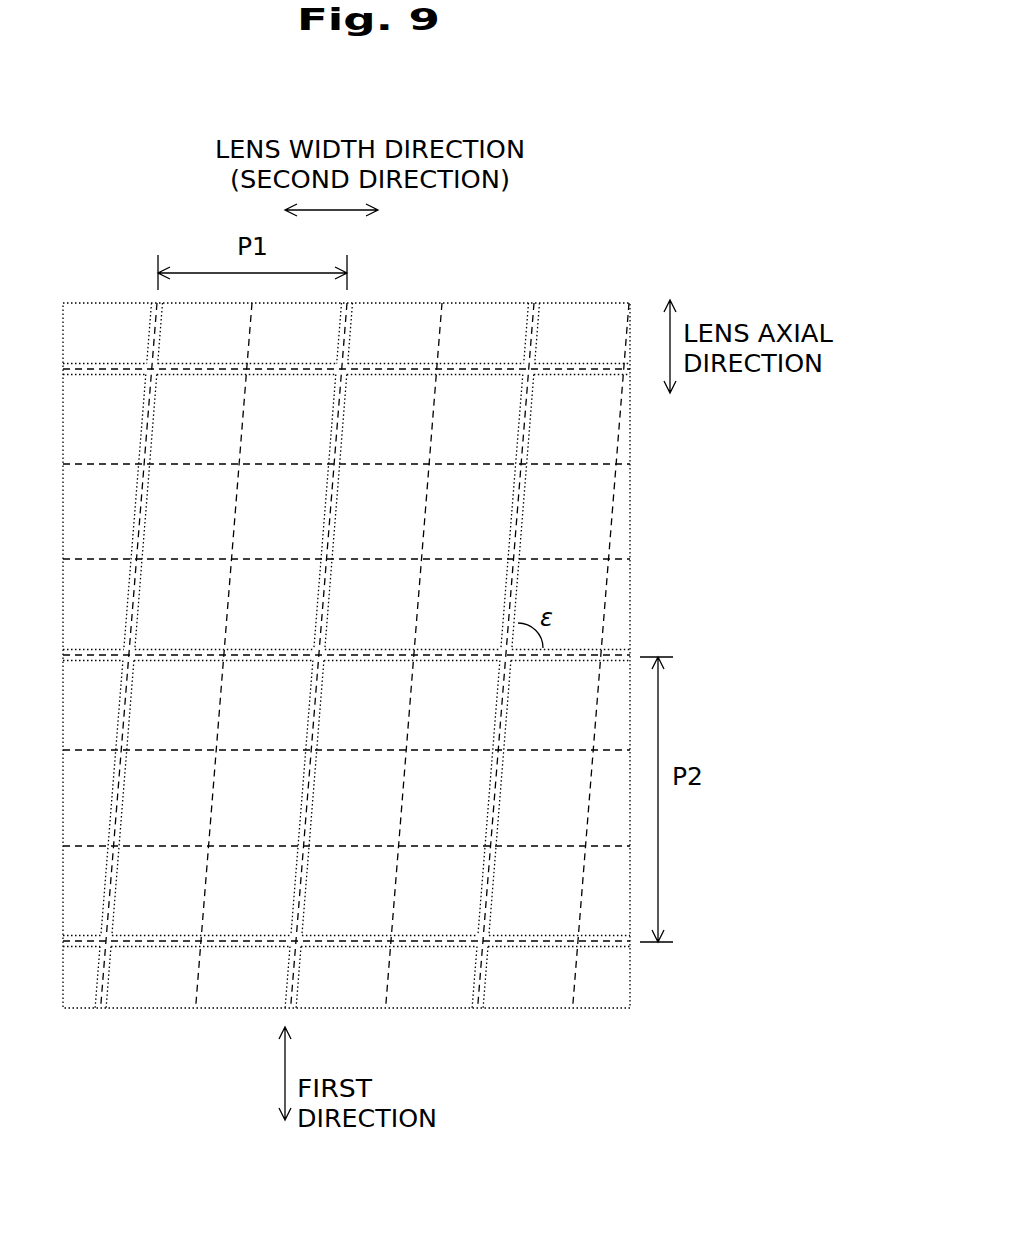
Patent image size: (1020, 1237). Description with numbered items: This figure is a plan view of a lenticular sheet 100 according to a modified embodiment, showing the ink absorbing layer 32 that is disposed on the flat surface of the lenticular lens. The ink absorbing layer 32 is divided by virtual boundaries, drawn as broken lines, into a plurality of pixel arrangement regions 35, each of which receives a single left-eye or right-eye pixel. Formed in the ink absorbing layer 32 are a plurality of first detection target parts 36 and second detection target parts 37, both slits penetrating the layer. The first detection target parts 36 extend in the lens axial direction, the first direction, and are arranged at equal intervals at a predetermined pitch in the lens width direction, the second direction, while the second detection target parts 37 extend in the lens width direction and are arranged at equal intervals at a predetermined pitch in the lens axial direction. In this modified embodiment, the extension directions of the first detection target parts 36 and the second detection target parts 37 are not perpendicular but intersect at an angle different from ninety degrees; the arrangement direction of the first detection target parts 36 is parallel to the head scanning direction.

The lenticular sheet 100 is at (625, 267).
The ink absorbing layer 32 is at (508, 990).
The pixel arrangement region 35 is at (138, 920).
The first detection target part 36 is at (153, 338).
The second detection target part 37 is at (566, 372).